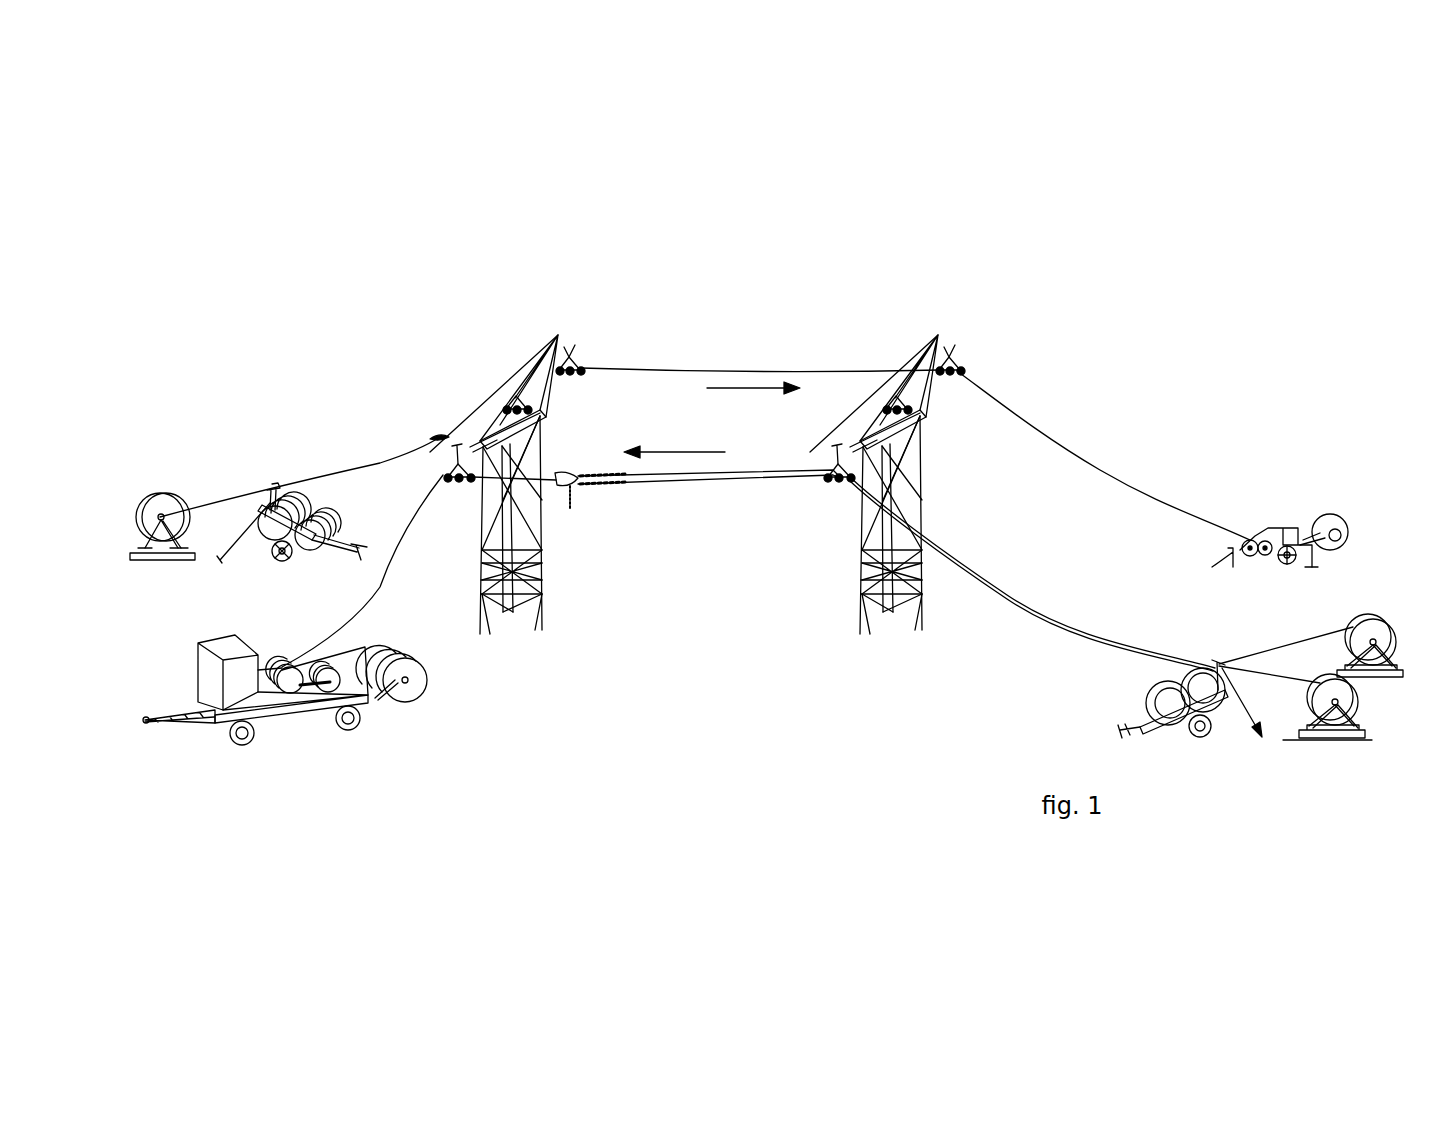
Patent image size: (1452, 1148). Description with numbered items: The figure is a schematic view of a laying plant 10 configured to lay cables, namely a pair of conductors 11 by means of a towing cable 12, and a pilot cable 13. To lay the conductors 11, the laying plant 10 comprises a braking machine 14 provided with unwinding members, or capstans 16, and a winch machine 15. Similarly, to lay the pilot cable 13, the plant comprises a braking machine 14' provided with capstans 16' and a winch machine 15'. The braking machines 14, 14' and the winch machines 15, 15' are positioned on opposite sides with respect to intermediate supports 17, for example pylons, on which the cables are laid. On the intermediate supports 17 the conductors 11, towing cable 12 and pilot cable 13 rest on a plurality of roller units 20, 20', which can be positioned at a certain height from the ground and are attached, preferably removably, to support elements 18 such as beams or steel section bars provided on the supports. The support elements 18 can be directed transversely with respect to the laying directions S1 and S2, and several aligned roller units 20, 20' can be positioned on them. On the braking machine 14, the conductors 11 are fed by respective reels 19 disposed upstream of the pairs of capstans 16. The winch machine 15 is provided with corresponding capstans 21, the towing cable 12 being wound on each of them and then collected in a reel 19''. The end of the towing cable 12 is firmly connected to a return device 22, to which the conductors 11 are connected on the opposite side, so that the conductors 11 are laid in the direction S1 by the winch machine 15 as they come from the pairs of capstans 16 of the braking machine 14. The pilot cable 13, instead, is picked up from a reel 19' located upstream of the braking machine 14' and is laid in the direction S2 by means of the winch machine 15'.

The laying plant 10 is at (452, 232).
The conductors 11 is at (718, 483).
The towing cable 12 is at (380, 587).
The pilot cable 13 is at (660, 370).
The braking machine 14 is at (1235, 714).
The braking machine 14' is at (292, 480).
The winch machine 15 is at (270, 717).
The winch machine 15' is at (1152, 469).
The capstans 16 is at (1186, 662).
The capstans 16' is at (299, 492).
The intermediate supports 17 is at (556, 587).
The support elements 18 is at (548, 380).
The reels 19 is at (1364, 677).
The reel 19' is at (162, 508).
The reel 19'' is at (405, 700).
The roller units 20 is at (774, 323).
The roller units 20' is at (655, 497).
The capstans 21 is at (330, 690).
The return device 22 is at (581, 496).
The laying direction S1 is at (683, 452).
The laying direction S2 is at (746, 388).